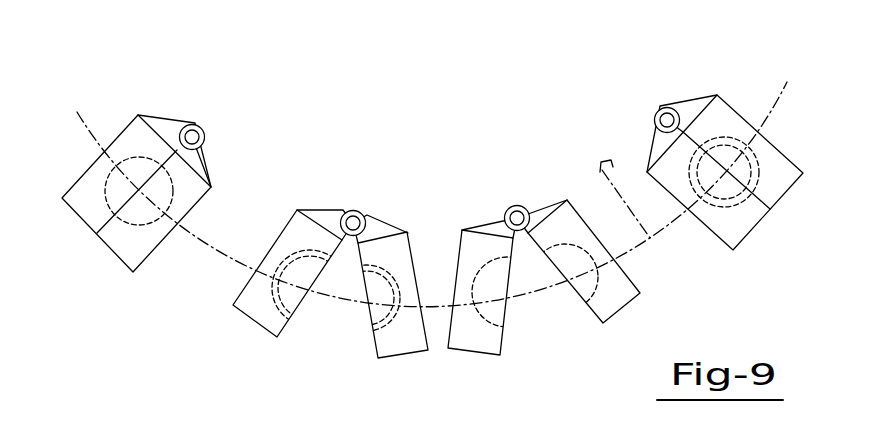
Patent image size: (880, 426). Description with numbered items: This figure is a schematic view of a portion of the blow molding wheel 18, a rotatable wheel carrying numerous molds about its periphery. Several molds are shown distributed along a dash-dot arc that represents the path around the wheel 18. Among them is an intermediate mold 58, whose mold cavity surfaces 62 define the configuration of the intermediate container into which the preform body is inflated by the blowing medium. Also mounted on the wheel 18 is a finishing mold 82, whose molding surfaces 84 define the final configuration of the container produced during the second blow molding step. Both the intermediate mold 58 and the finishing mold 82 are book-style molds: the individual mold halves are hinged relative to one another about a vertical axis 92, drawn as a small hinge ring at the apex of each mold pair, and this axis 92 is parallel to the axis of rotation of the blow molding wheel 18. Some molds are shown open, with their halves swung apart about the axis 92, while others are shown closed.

The blow molding wheel 18 is at (650, 238).
The intermediate mold 58 is at (123, 245).
The mold cavity surfaces 62 is at (118, 195).
The finishing mold 82 is at (255, 307).
The molding surfaces 84 is at (742, 170).
The vertical axis 92 is at (196, 125).